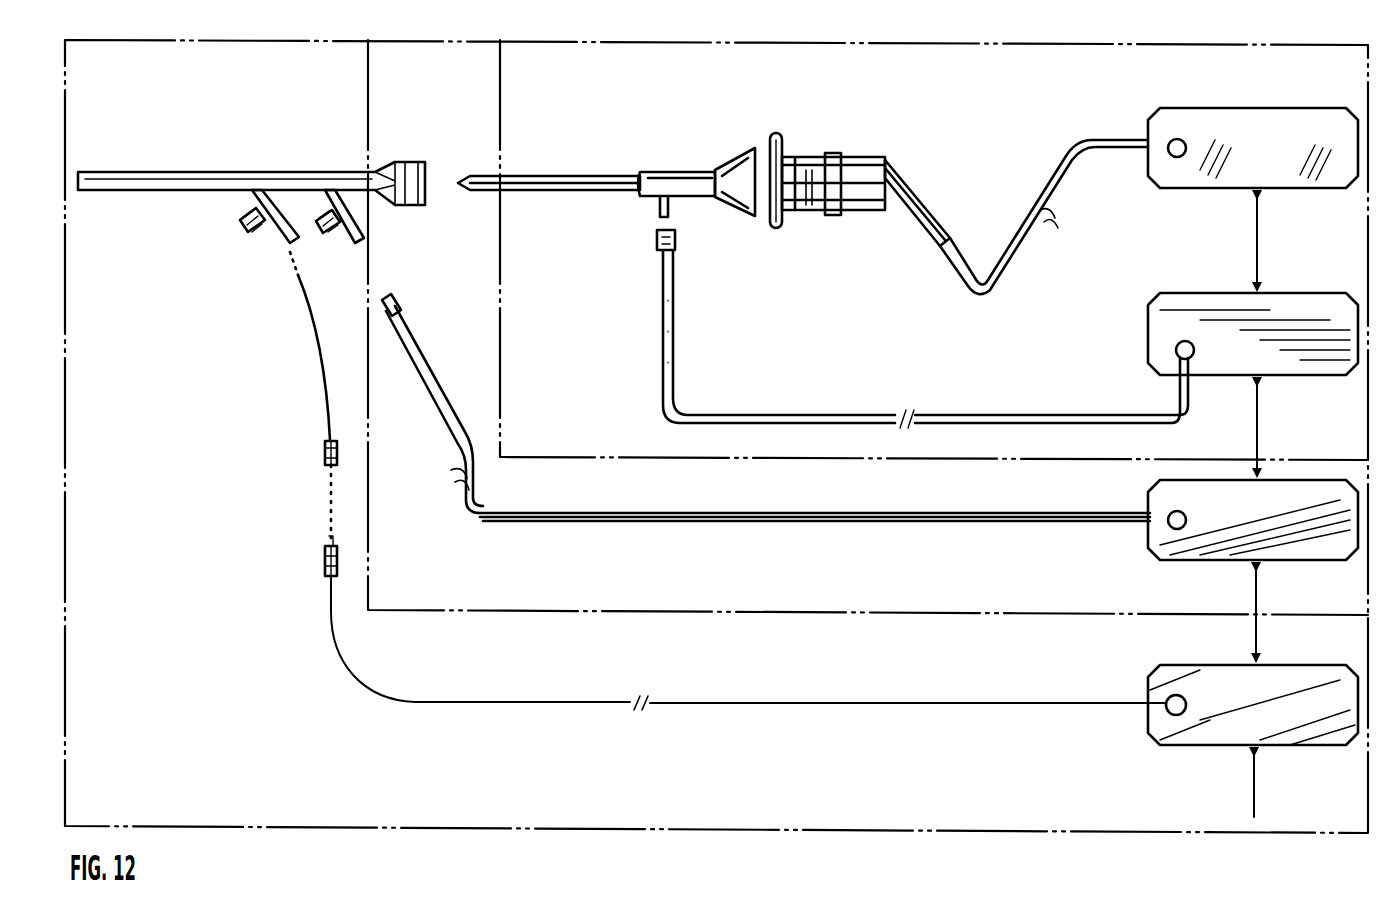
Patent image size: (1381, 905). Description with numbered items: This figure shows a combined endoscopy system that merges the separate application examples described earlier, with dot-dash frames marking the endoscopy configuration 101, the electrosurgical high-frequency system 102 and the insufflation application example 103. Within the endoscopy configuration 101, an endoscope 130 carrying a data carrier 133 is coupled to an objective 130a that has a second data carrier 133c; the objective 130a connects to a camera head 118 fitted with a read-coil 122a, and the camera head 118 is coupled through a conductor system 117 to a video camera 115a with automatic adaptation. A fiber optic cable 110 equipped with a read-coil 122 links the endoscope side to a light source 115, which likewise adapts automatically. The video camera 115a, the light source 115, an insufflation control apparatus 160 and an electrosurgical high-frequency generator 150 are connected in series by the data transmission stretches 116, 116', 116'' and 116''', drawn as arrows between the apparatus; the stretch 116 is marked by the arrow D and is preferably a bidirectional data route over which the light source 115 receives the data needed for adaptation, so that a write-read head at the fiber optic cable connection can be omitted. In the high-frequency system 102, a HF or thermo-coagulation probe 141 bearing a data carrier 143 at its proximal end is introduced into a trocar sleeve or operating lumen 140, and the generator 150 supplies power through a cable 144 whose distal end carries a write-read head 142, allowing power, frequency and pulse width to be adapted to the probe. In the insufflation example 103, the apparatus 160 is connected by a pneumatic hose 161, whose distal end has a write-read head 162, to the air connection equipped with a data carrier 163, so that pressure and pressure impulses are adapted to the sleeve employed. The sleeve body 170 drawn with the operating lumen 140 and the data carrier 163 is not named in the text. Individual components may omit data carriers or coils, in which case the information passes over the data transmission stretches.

The endoscopy system configuration 101 is at (556, 443).
The electrosurgical high-frequency system 102 is at (362, 802).
The insufflation application example 103 is at (928, 598).
The fiber optic cable 110 is at (664, 336).
The light source 115 is at (1280, 308).
The video camera 115a is at (1246, 120).
The data transmission stretch 116 is at (1218, 241).
The data transmission stretch 116' is at (1295, 425).
The data transmission stretch 116'' is at (1214, 610).
The data transmission stretch 116''' is at (1214, 784).
The conductor system 117 is at (1006, 272).
The camera head 118 is at (852, 172).
The read-coil 122 is at (658, 236).
The read-coil 122a is at (906, 216).
The endoscope 130 is at (532, 184).
The objective 130a is at (772, 210).
The data carrier 133 is at (696, 178).
The second data carrier 133c is at (812, 198).
The trocar sleeve or operating lumen 140 is at (262, 204).
The HF probe or thermo-coagulation probe 141 is at (312, 326).
The write-read head 142 is at (331, 558).
The data carrier 143 is at (326, 452).
The cable 144 is at (702, 710).
The high frequency power generator or thermo-coagulation control device 150 is at (1228, 672).
The insufflation control apparatus 160 is at (1152, 490).
The pneumatic hose 161 is at (728, 518).
The write-read head 162 is at (396, 300).
The data carrier 163 is at (352, 232).
The catheter tube 170 is at (205, 184).
The arrow D is at (1262, 230).